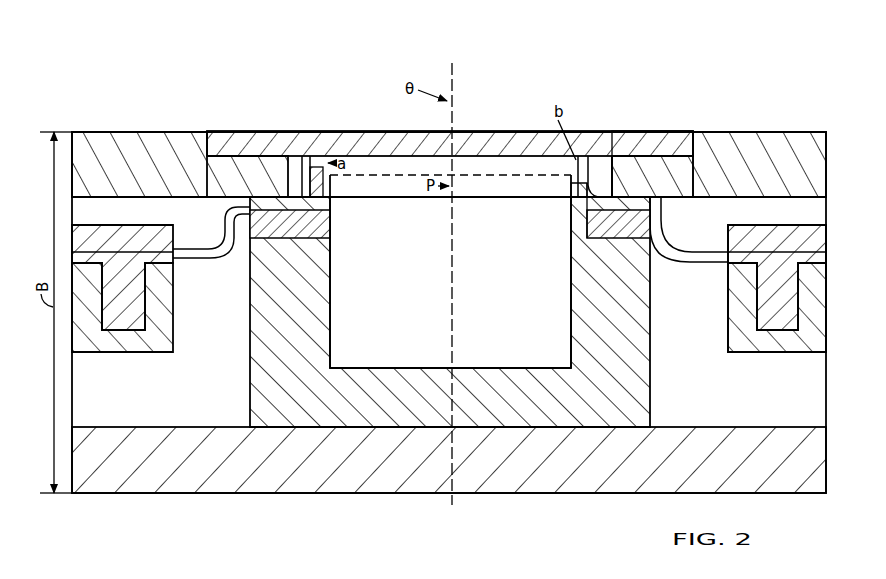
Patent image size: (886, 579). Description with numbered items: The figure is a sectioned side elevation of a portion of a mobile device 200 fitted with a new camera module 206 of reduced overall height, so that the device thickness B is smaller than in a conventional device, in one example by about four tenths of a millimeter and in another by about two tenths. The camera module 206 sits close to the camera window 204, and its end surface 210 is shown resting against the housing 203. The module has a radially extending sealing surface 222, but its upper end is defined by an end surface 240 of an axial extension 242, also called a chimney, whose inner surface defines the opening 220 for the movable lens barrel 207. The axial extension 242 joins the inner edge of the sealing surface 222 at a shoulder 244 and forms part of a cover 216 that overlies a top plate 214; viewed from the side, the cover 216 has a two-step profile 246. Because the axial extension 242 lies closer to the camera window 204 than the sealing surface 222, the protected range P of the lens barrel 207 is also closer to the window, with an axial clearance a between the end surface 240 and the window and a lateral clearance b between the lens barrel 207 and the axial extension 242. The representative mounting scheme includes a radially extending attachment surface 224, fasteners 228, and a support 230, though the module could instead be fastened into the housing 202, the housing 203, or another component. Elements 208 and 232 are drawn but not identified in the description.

The mobile device 200 is at (731, 62).
The housing 202 is at (758, 132).
The housing 203 is at (565, 493).
The camera window 204 is at (482, 130).
The camera module 206 is at (246, 351).
The lens barrel 207 is at (420, 176).
The dielectric region 208 is at (637, 140).
The end surface 210 is at (410, 415).
The top plate 214 is at (570, 225).
The cover 216 is at (672, 240).
The opening 220 is at (590, 182).
The sealing surface 222 is at (672, 170).
The radially extending attachment surface 224 is at (717, 252).
The fastener 228 is at (761, 225).
The support 230 is at (757, 320).
The anchor outer layer 232 is at (772, 353).
The end surface 240 is at (583, 165).
The axial extension 242 is at (613, 170).
The shoulder 244 is at (307, 160).
The two-step profile 246 is at (688, 223).